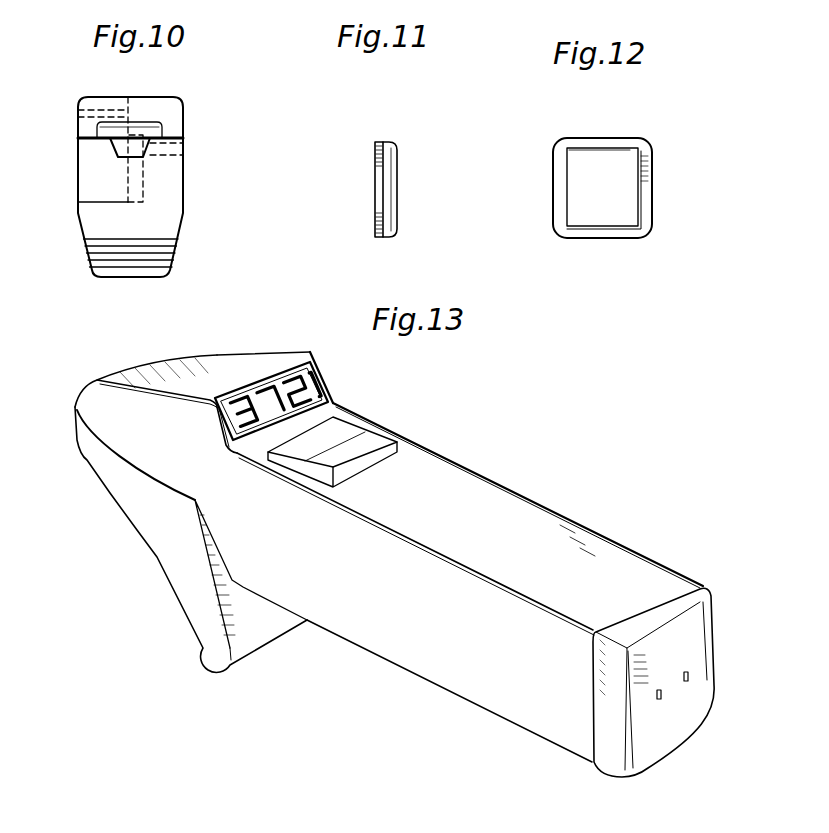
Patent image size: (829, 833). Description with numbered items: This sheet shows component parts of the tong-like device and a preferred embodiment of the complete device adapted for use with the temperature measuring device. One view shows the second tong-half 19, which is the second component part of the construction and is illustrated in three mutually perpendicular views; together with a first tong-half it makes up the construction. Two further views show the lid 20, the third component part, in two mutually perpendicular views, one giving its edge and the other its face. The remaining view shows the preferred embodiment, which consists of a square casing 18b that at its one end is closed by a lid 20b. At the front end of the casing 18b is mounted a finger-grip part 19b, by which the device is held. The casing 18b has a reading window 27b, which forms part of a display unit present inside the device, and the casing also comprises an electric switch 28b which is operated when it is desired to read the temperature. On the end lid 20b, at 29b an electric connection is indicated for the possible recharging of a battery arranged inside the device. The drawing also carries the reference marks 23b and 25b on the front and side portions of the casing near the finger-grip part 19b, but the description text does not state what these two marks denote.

In FIG. 10, the second tong-half 19 is at (190, 144).
In FIG. 11, the lid 20 is at (404, 159).
In FIG. 12, the lid 20 is at (656, 150).
In FIG. 13, the square casing 18b is at (457, 488).
In FIG. 13, the finger-grip part 19b is at (167, 528).
In FIG. 13, the lid 20b is at (700, 623).
In FIG. 13, the front sloped panel 23b is at (102, 397).
In FIG. 13, the side wall 25b is at (105, 462).
In FIG. 13, the reading window 27b is at (302, 393).
In FIG. 13, the electric switch 28b is at (367, 445).
In FIG. 13, the electric connection 29b is at (663, 694).